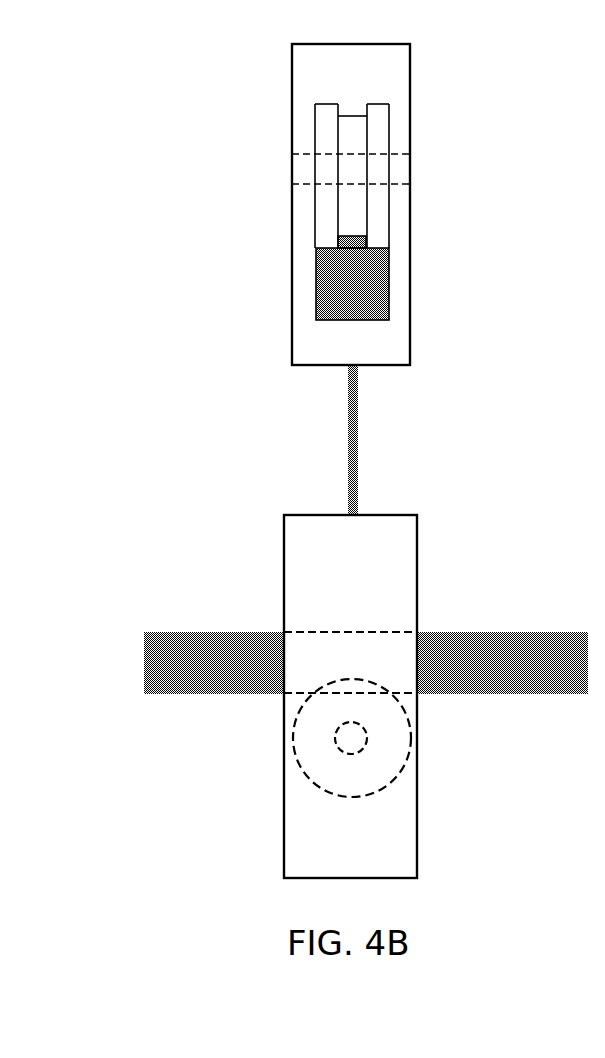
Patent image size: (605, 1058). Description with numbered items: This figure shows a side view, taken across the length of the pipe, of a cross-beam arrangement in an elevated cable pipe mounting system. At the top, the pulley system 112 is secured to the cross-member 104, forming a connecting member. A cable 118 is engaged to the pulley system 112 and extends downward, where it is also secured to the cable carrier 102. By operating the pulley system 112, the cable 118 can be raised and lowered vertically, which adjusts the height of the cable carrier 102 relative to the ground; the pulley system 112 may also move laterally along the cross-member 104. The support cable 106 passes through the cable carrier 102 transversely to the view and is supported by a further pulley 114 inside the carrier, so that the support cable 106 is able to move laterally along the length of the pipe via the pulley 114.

The cable carrier 102 is at (290, 578).
The cross-member 104 is at (316, 283).
The support cable 106 is at (143, 678).
The pulley system 112 is at (417, 160).
The further pulley 114 is at (276, 766).
The cable 118 is at (343, 442).